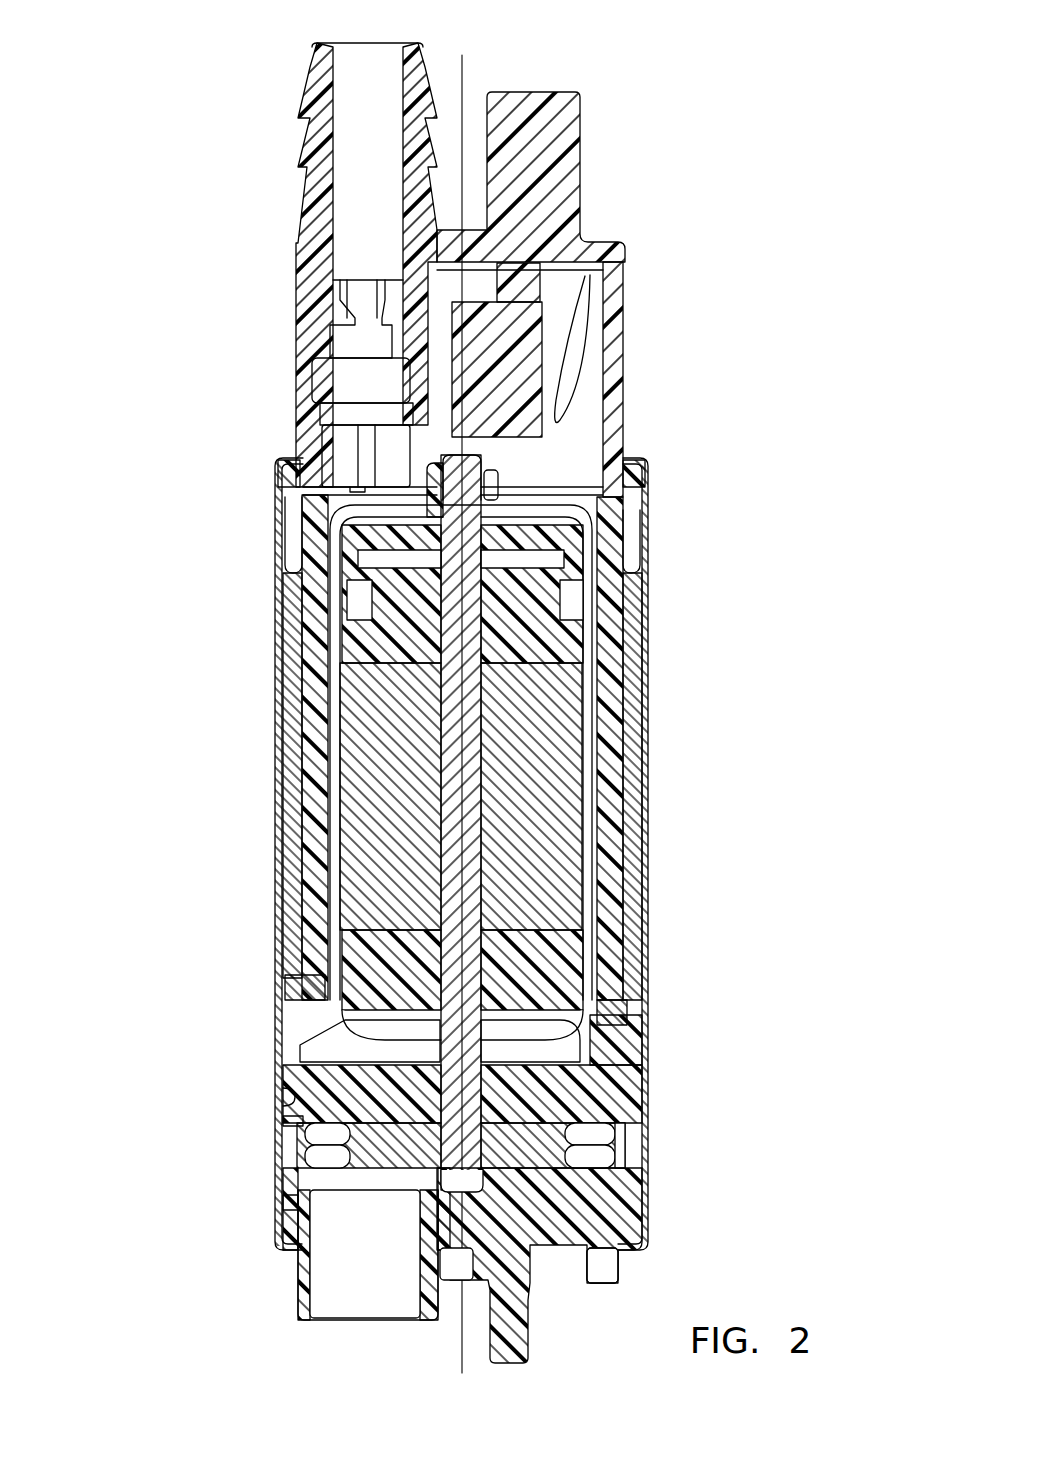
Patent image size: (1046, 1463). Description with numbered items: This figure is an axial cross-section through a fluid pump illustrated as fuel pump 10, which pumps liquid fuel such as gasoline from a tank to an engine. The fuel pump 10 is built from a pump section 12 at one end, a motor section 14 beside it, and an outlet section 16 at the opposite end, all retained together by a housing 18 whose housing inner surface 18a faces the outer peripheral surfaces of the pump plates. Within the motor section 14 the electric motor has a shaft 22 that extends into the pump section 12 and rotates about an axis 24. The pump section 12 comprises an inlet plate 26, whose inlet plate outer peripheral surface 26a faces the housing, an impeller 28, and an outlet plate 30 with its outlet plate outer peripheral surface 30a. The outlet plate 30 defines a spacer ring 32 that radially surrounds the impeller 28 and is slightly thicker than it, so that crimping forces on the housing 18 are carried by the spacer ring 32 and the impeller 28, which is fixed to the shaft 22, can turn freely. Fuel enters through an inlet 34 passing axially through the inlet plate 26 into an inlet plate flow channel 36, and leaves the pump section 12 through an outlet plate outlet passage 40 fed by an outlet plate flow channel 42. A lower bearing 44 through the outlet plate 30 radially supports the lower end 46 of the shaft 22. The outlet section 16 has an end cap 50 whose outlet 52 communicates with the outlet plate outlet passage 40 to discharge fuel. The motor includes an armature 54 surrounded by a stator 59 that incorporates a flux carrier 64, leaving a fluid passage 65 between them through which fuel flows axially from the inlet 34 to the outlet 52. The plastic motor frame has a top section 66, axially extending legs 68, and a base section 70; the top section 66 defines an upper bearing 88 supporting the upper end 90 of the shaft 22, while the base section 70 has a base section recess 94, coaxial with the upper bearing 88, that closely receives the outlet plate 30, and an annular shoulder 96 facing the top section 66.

The fuel pump 10 is at (705, 65).
The pump section 12 is at (195, 1062).
The motor section 14 is at (195, 462).
The outlet section 16 is at (195, 49).
The housing 18 is at (638, 462).
The housing inner surface 18a is at (290, 1097).
The shaft 22 is at (470, 812).
The axis 24 is at (465, 60).
The inlet plate 26 is at (630, 1220).
The inlet plate outer peripheral surface 26a is at (282, 1202).
The impeller 28 is at (617, 1160).
The outlet plate 30 is at (627, 1070).
The outlet plate outer peripheral surface 30a is at (290, 1120).
The spacer ring 32 is at (290, 1160).
The inlet 34 is at (343, 1303).
The inlet plate flow channel 36 is at (590, 1178).
The outlet plate outlet passage 40 is at (545, 1097).
The outlet plate flow channel 42 is at (600, 1145).
The lower bearing 44 is at (440, 1047).
The lower end 46 is at (595, 1150).
The end cap 50 is at (620, 313).
The outlet 52 is at (348, 50).
The armature 54 is at (590, 796).
The stator 59 is at (296, 773).
The flux carrier 64 is at (635, 618).
The fluid passage 65 is at (332, 920).
The top section 66 is at (483, 465).
The legs 68 is at (612, 722).
The base section 70 is at (630, 1037).
The upper bearing 88 is at (472, 460).
The upper end 90 is at (437, 480).
The base section recess 94 is at (613, 1010).
The annular shoulder 96 is at (302, 977).